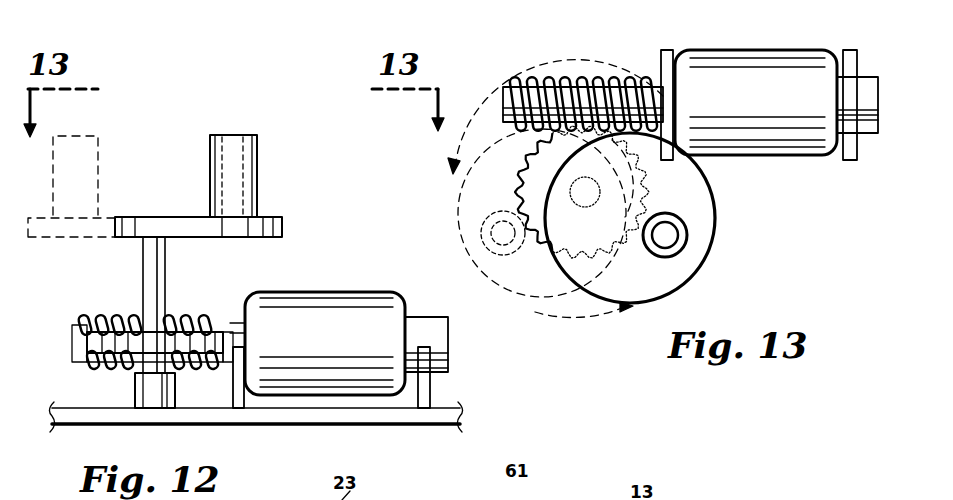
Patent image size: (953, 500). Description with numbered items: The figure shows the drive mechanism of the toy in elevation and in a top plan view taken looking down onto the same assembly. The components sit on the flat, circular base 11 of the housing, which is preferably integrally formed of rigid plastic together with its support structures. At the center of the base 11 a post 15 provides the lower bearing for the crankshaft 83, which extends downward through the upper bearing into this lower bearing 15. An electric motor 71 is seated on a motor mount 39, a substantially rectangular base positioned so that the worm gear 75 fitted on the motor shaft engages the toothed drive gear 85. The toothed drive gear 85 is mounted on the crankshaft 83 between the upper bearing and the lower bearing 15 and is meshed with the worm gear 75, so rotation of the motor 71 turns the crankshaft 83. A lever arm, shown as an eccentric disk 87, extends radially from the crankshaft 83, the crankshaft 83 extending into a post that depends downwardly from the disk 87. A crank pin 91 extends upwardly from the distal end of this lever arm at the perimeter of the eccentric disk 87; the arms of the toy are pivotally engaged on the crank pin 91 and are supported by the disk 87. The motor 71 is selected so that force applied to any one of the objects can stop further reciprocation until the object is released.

In FIG. 12, the base 11 is at (438, 412).
In FIG. 12, the post 15 is at (137, 390).
In FIG. 12, the motor mount 39 is at (425, 348).
In FIG. 13, the motor mount 39 is at (852, 160).
In FIG. 12, the electric motor 71 is at (311, 306).
In FIG. 13, the electric motor 71 is at (787, 65).
In FIG. 12, the worm gear 75 is at (103, 325).
In FIG. 13, the worm gear 75 is at (515, 80).
In FIG. 12, the crankshaft 83 is at (150, 274).
In FIG. 13, the crankshaft 83 is at (598, 184).
In FIG. 12, the toothed drive gear 85 is at (188, 337).
In FIG. 13, the toothed drive gear 85 is at (528, 172).
In FIG. 12, the eccentric disk 87 is at (263, 222).
In FIG. 13, the eccentric disk 87 is at (698, 255).
In FIG. 12, the crank pin 91 is at (215, 160).
In FIG. 13, the crank pin 91 is at (688, 235).